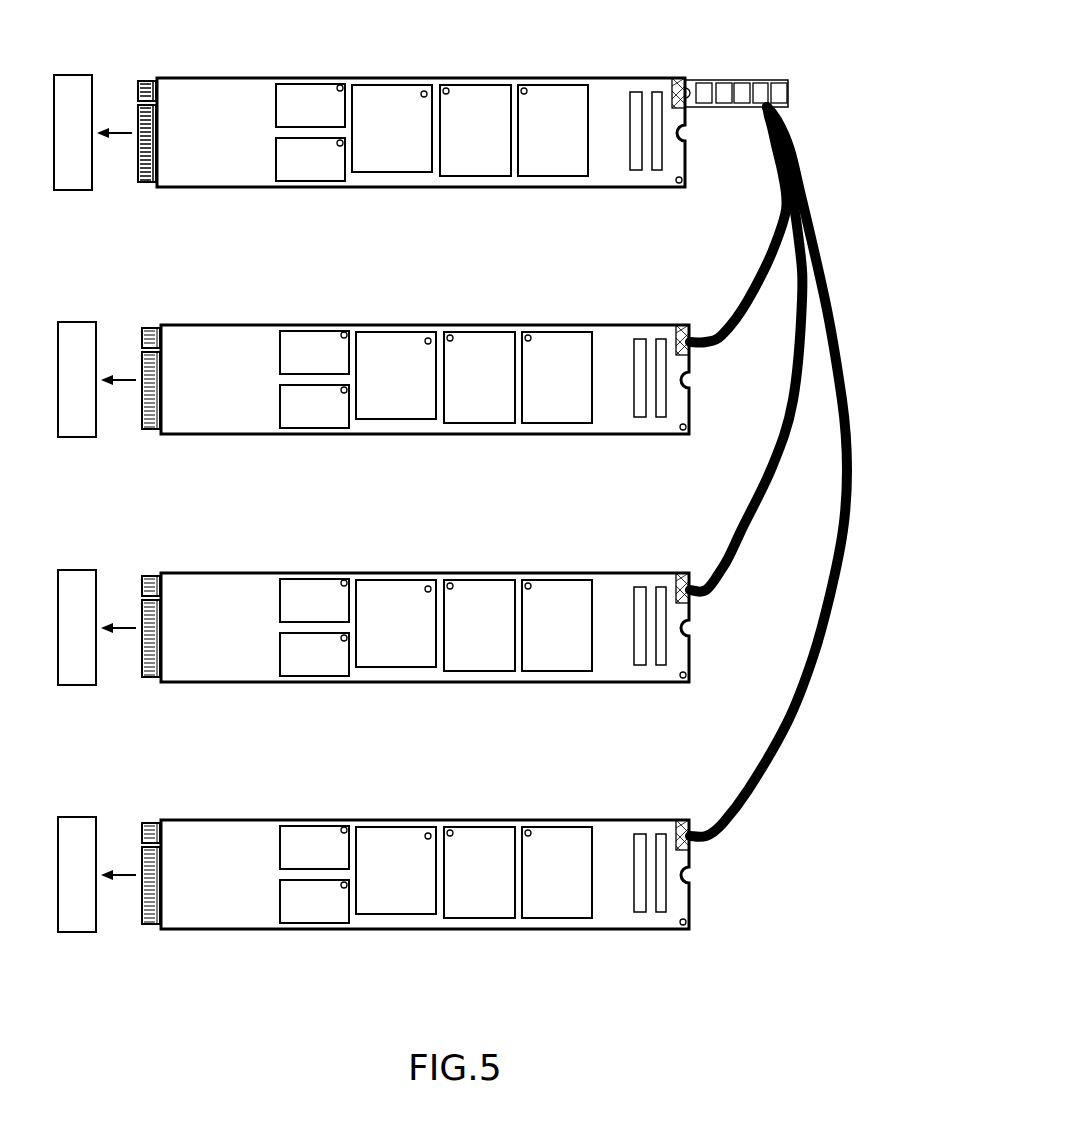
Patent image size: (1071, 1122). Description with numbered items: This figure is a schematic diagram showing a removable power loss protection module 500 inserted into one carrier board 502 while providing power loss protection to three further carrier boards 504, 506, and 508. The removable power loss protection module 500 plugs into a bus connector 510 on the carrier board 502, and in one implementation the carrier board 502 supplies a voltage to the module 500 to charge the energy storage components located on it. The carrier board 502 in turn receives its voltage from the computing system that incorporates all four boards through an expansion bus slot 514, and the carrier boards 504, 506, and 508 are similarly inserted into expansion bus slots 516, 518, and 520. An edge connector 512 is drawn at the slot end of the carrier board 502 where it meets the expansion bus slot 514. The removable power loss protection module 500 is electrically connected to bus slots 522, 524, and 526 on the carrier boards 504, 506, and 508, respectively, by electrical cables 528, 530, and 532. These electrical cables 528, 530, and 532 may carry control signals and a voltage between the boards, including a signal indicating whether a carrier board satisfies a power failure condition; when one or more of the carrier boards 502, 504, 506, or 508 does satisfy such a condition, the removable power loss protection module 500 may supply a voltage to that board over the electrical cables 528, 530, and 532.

The removable power loss protection module 500 is at (718, 80).
The carrier board 502 is at (260, 77).
The carrier board 504 is at (264, 324).
The carrier board 506 is at (264, 572).
The carrier board 508 is at (264, 819).
The bus connector 510 is at (673, 77).
The edge connector 512 is at (147, 186).
The expansion bus slot 514 is at (72, 74).
The expansion bus slot 516 is at (73, 321).
The expansion bus slot 518 is at (73, 569).
The expansion bus slot 520 is at (73, 816).
The bus slot 522 is at (677, 324).
The bus slot 524 is at (677, 572).
The bus slot 526 is at (677, 819).
The electrical cable 528 is at (767, 256).
The electrical cable 530 is at (765, 485).
The electrical cable 532 is at (767, 750).